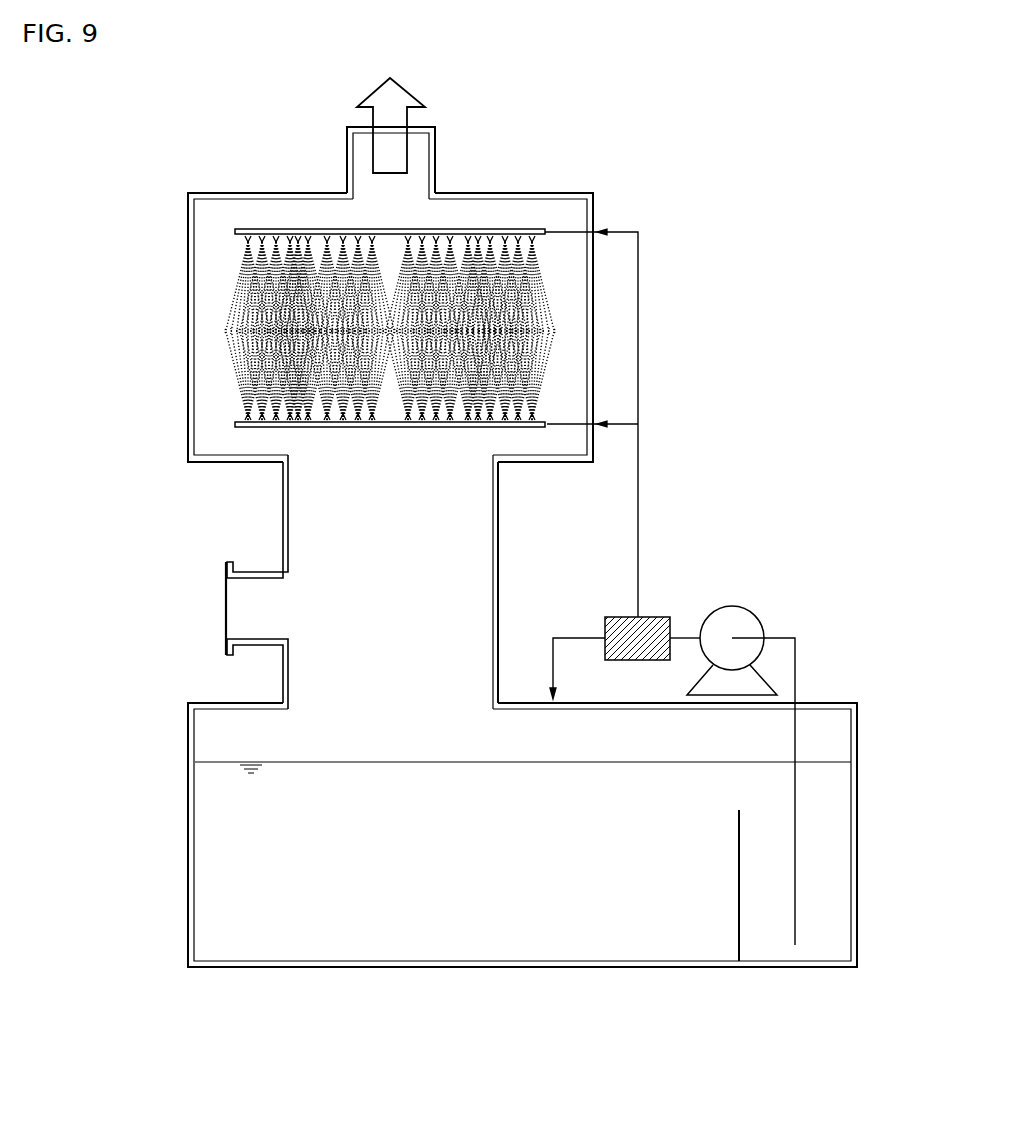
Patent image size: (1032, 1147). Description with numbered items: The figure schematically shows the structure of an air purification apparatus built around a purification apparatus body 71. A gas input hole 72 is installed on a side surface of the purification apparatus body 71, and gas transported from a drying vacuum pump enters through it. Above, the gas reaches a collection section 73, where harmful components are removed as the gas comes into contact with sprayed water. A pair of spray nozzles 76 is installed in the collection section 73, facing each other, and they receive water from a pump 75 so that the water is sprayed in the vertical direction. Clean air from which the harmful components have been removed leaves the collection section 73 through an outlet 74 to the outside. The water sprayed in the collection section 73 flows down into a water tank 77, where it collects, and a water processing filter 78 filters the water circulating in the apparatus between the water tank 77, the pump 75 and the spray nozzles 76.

The purification apparatus body 71 is at (283, 508).
The gas input hole 72 is at (226, 608).
The collection section 73 is at (188, 320).
The outlet 74 is at (347, 152).
The pump 75 is at (757, 611).
The spray nozzles 76 is at (484, 228).
The water tank 77 is at (857, 812).
The water processing filter 78 is at (655, 616).